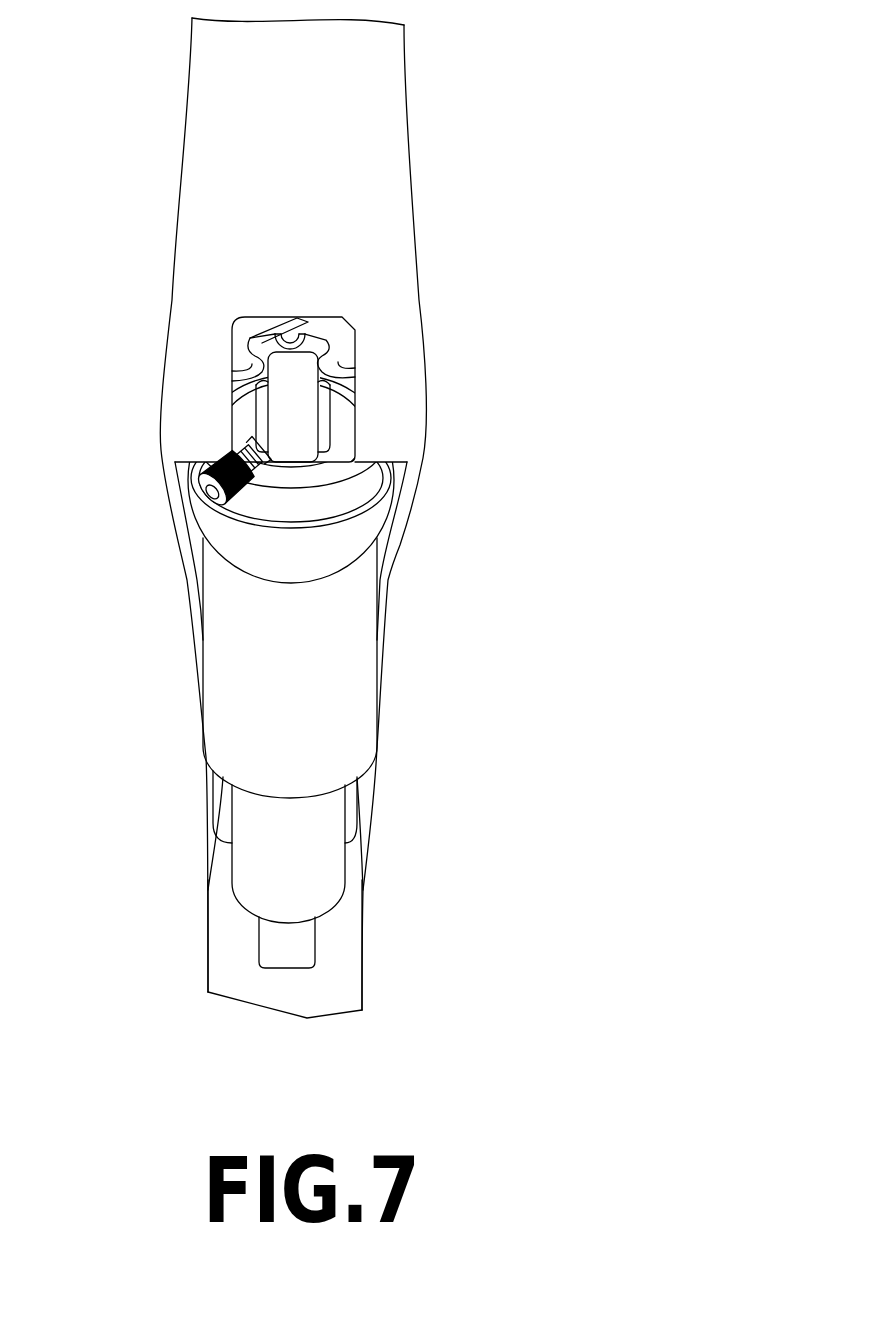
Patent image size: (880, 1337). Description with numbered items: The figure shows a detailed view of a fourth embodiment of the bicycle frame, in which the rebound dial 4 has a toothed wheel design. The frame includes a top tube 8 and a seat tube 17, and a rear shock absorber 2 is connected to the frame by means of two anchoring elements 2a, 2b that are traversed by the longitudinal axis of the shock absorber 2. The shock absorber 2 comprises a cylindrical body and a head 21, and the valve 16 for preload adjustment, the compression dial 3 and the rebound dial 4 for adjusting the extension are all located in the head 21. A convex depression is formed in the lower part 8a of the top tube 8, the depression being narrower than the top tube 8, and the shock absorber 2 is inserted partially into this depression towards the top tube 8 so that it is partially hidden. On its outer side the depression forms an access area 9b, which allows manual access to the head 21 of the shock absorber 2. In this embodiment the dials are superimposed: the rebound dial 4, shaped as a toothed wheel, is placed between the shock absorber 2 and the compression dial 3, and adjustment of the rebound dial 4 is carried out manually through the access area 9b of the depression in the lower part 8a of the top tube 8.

The rear shock absorber 2 is at (270, 682).
The anchoring element 2a is at (295, 408).
The anchoring element 2b is at (283, 942).
The compression dial 3 is at (283, 317).
The rebound dial 4 is at (322, 347).
The top tube 8 is at (405, 126).
The lower part of the top tube 8a is at (282, 108).
The access area 9b is at (232, 380).
The valve 16 is at (207, 497).
The seat tube 17 is at (342, 963).
The head 21 is at (358, 537).